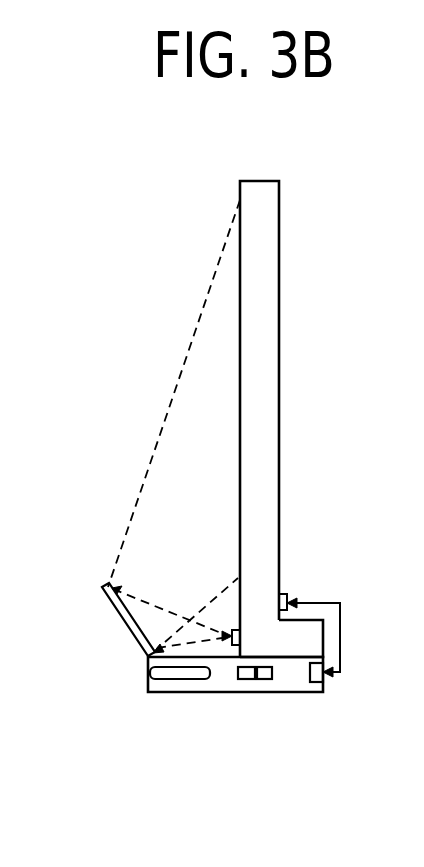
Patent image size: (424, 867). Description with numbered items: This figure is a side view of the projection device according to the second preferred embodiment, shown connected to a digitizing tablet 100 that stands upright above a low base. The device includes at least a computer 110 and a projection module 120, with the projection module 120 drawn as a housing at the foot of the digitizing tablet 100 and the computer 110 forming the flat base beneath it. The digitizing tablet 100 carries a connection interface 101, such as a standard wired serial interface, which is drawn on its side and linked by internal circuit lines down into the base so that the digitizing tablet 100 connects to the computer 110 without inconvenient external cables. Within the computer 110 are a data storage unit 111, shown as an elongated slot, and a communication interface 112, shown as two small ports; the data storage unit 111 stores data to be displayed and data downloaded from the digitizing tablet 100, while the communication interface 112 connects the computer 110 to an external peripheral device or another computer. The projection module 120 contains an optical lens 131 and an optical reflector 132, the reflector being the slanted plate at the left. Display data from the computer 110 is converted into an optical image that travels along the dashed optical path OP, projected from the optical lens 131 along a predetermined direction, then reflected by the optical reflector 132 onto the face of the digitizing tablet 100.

The digitizing tablet 100 is at (262, 181).
The connection interface 101 is at (283, 592).
The computer 110 is at (287, 693).
The data storage unit 111 is at (150, 673).
The communication interface 112 is at (243, 679).
The projection module 120 is at (298, 637).
The optical lens 131 is at (229, 633).
The optical reflector 132 is at (122, 617).
The optical path OP is at (142, 600).